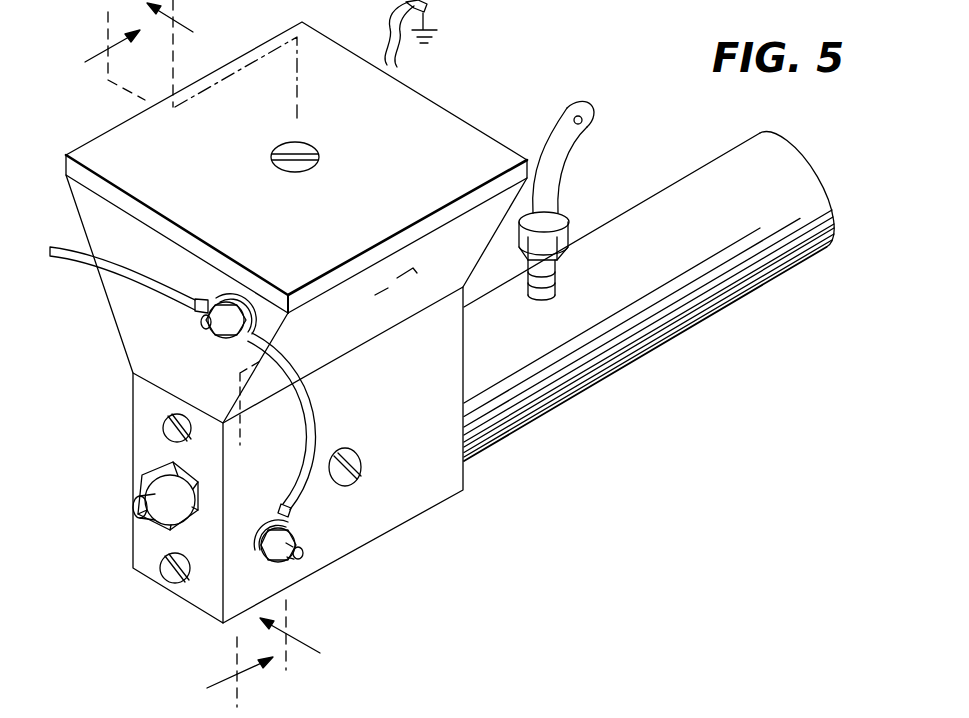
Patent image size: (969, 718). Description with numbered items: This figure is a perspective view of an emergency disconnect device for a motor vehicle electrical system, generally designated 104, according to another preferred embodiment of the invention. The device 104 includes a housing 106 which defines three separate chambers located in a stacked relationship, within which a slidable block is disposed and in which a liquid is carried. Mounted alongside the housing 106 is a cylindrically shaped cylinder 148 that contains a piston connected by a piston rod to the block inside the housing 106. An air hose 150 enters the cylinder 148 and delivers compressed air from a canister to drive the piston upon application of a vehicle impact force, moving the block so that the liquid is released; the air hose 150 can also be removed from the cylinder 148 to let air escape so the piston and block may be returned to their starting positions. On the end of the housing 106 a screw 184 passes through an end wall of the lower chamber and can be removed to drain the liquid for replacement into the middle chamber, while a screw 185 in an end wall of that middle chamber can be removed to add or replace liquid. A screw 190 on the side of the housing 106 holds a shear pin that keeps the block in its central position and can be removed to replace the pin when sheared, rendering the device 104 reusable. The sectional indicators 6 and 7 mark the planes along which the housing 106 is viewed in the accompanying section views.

The motor vehicle electrical system disconnect device 104 is at (469, 90).
The housing 106 is at (347, 327).
The cylinder 148 is at (627, 344).
The air hose 150 is at (560, 153).
The screw 184 is at (177, 583).
The screw 185 is at (163, 428).
The screw 190 is at (357, 477).
The section line 6 is at (165, 363).
The section line 7 is at (243, 338).